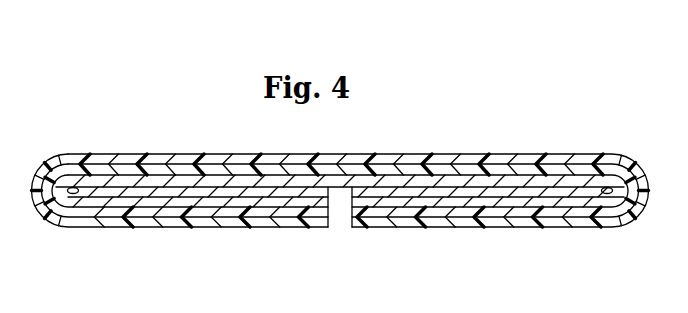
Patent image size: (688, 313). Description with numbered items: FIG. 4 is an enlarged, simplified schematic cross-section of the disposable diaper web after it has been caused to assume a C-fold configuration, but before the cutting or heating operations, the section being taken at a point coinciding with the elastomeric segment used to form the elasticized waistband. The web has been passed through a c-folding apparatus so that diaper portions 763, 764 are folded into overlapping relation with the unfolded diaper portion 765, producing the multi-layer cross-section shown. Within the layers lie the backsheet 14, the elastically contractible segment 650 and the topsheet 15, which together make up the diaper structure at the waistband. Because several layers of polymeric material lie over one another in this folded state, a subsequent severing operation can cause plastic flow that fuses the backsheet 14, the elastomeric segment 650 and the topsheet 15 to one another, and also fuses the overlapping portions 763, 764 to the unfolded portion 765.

The backsheet 14 is at (518, 162).
The topsheet 15 is at (340, 186).
The elastically contractible segment 650 is at (217, 168).
The diaper portion 763 is at (193, 226).
The diaper portion 764 is at (513, 228).
The unfolded portion 765 is at (122, 153).